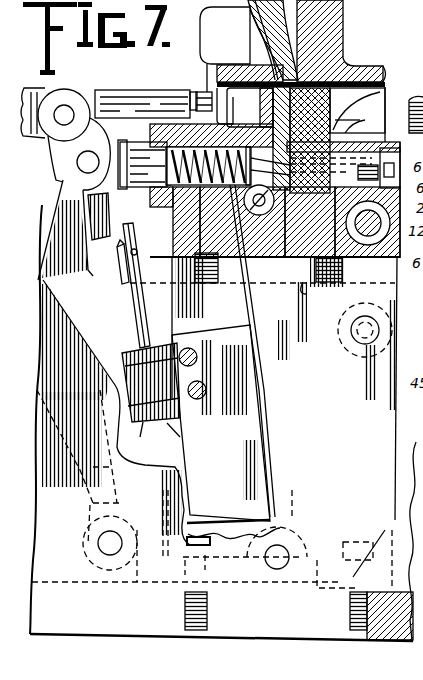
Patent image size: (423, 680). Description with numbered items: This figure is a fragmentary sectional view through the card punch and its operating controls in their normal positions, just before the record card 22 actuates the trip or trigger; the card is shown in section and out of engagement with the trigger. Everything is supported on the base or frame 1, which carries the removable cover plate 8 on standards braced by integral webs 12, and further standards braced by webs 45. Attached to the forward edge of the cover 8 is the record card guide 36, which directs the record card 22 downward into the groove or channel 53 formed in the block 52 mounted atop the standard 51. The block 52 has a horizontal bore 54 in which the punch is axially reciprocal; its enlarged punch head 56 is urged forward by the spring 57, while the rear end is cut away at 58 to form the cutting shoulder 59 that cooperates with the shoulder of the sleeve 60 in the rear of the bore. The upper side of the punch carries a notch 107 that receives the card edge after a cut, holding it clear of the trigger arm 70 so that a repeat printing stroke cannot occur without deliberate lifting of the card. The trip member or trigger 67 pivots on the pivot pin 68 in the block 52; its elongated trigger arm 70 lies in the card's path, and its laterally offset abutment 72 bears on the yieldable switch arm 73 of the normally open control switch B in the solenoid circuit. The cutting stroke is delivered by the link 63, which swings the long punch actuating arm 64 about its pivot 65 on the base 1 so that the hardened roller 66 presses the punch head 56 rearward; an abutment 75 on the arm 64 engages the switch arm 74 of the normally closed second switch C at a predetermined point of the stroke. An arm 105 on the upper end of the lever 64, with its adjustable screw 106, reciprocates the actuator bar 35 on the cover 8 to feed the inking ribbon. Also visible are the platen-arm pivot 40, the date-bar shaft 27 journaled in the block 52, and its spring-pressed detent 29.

The base or frame 1 is at (272, 622).
The cover plate 8 is at (385, 76).
The integral webs 12 is at (393, 512).
The record card 22 is at (302, 40).
The shaft 27 is at (285, 271).
The spring-pressed detent 29 is at (345, 372).
The actuator bar 35 is at (245, 107).
The record card guide 36 is at (243, 18).
The pivot 40 is at (278, 556).
The webs 45 is at (50, 348).
The standard 51 is at (168, 291).
The block 52 is at (168, 204).
The groove or channel 53 is at (277, 102).
The horizontal bore 54 is at (176, 135).
The punch head 56 is at (158, 140).
The spring 57 is at (158, 184).
The cut-away portion 58 is at (336, 127).
The cutting shoulder 59 is at (357, 110).
The sleeve 60 is at (359, 125).
The link 63 is at (41, 90).
The punch actuating arm or lever 64 is at (82, 250).
The pivot 65 is at (112, 541).
The hardened roller 66 is at (80, 189).
The trip member or trigger 67 is at (294, 252).
The pivot pin 68 is at (138, 251).
The trigger arm 70 is at (343, 130).
The laterally offset abutment 72 is at (253, 351).
The switch arm 73 is at (259, 296).
The switch arm 74 is at (126, 232).
The abutment 75 is at (87, 212).
The arm 105 is at (113, 96).
The screw 106 is at (216, 75).
The notch 107 is at (345, 67).
The control switch B is at (232, 402).
The second switch C is at (150, 340).